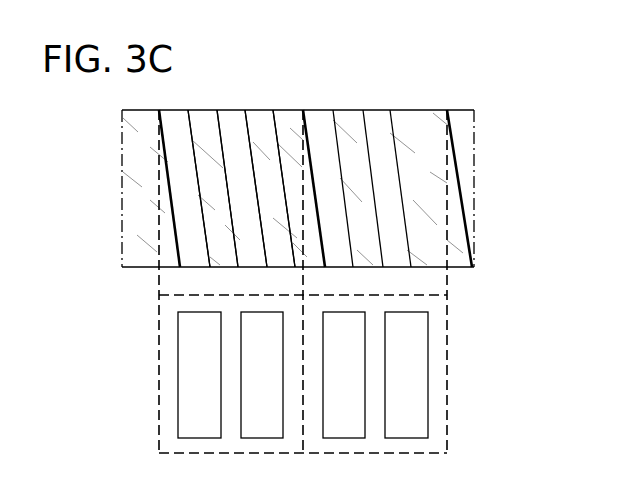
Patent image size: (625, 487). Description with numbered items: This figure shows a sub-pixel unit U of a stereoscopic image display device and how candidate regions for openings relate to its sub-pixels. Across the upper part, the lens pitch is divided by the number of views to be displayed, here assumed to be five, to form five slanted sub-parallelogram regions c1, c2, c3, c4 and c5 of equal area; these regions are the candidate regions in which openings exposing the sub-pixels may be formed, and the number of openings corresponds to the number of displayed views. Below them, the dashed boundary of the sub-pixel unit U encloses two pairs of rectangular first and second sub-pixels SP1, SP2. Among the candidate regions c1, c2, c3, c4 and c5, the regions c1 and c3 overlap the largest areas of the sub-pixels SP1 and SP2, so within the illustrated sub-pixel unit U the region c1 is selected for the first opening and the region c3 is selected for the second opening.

The sub-pixel unit U is at (158, 376).
The sub-parallelogram region c1 is at (184, 188).
The sub-parallelogram region c2 is at (213, 188).
The sub-parallelogram region c3 is at (242, 188).
The sub-parallelogram region c4 is at (270, 188).
The sub-parallelogram region c5 is at (299, 188).
The first sub-pixel SP1 is at (271, 375).
The second sub-pixel SP2 is at (334, 375).